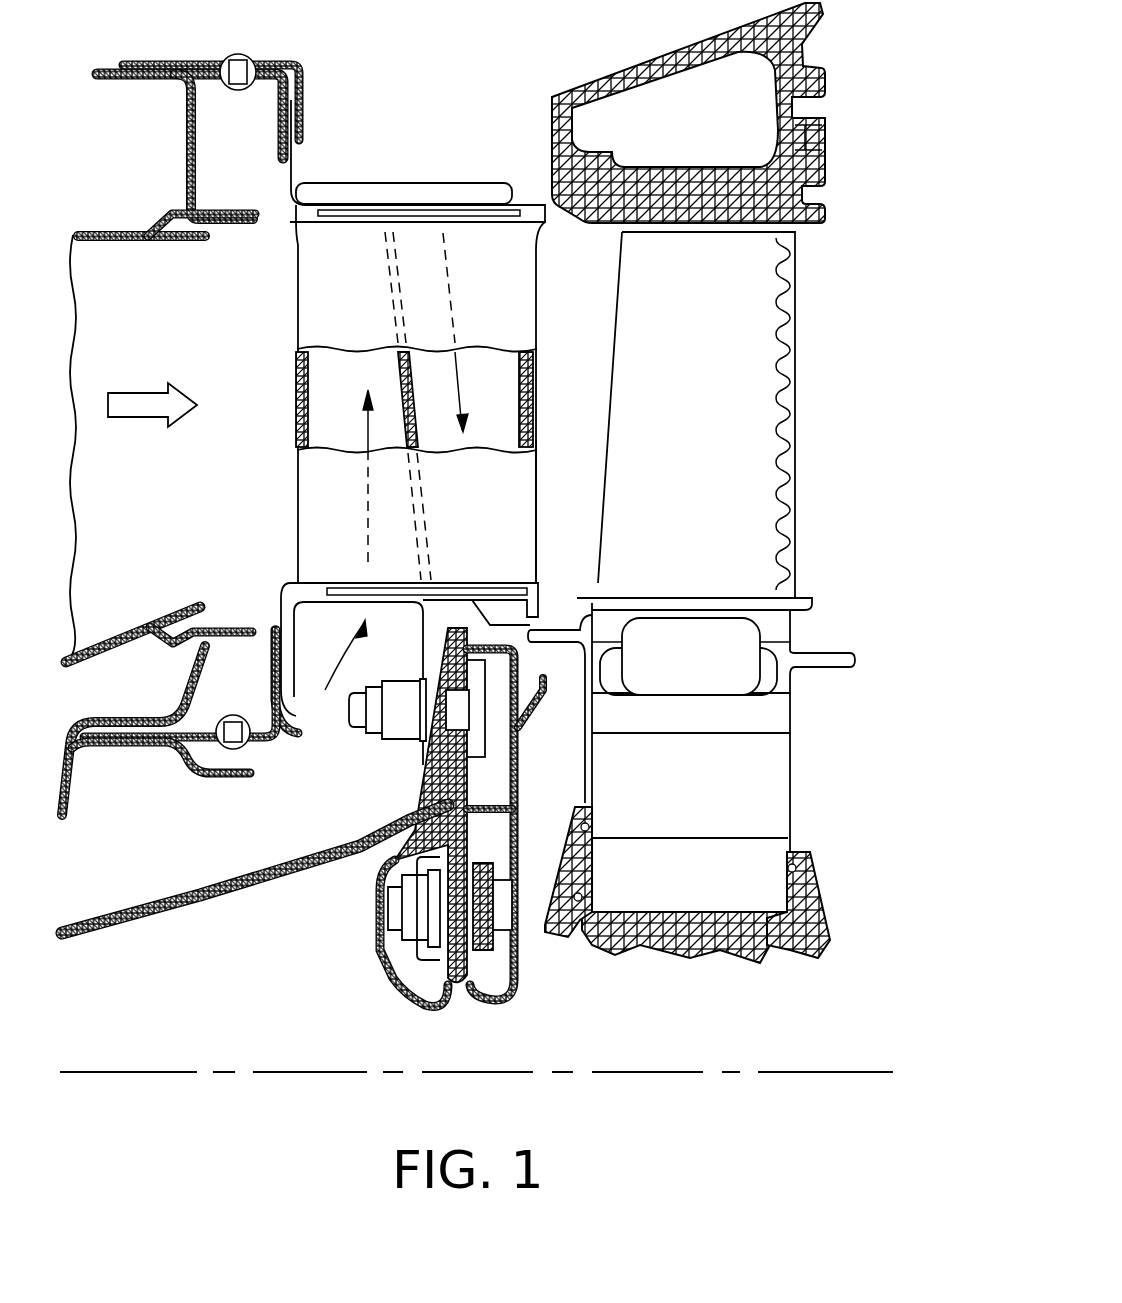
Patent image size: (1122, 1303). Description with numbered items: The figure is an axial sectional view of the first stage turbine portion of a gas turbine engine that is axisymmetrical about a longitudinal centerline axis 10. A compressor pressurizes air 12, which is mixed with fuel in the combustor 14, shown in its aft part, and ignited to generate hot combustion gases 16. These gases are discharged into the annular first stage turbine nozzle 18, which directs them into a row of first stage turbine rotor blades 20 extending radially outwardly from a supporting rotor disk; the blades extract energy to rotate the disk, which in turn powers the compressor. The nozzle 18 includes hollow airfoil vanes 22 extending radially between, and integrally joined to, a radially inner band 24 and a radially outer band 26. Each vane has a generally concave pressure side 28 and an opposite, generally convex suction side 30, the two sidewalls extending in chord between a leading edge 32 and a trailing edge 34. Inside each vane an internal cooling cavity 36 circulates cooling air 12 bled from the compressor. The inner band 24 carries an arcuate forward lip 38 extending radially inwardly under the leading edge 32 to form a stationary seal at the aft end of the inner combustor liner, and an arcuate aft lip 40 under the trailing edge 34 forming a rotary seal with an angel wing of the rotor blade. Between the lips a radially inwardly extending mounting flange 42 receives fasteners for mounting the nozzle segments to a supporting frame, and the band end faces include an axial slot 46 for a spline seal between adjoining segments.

The axial centerline axis 10 is at (297, 1070).
The air 12 is at (432, 185).
The combustor 14 is at (142, 587).
The hot combustion gases 16 is at (155, 388).
The first stage turbine nozzle 18 is at (357, 100).
The first stage turbine rotor blades 20 is at (709, 392).
The hollow airfoil vanes 22 is at (320, 303).
The inner band 24 is at (450, 585).
The outer band 26 is at (472, 225).
The pressure side 28 is at (492, 512).
The suction side 30 is at (310, 503).
The leading edge 32 is at (295, 466).
The trailing edge 34 is at (540, 455).
The internal cooling circuit or cavity 36 is at (509, 443).
The forward lip 38 is at (290, 658).
The aft lip 40 is at (545, 590).
The mounting flange 42 is at (423, 768).
The axial slot 46 is at (348, 593).